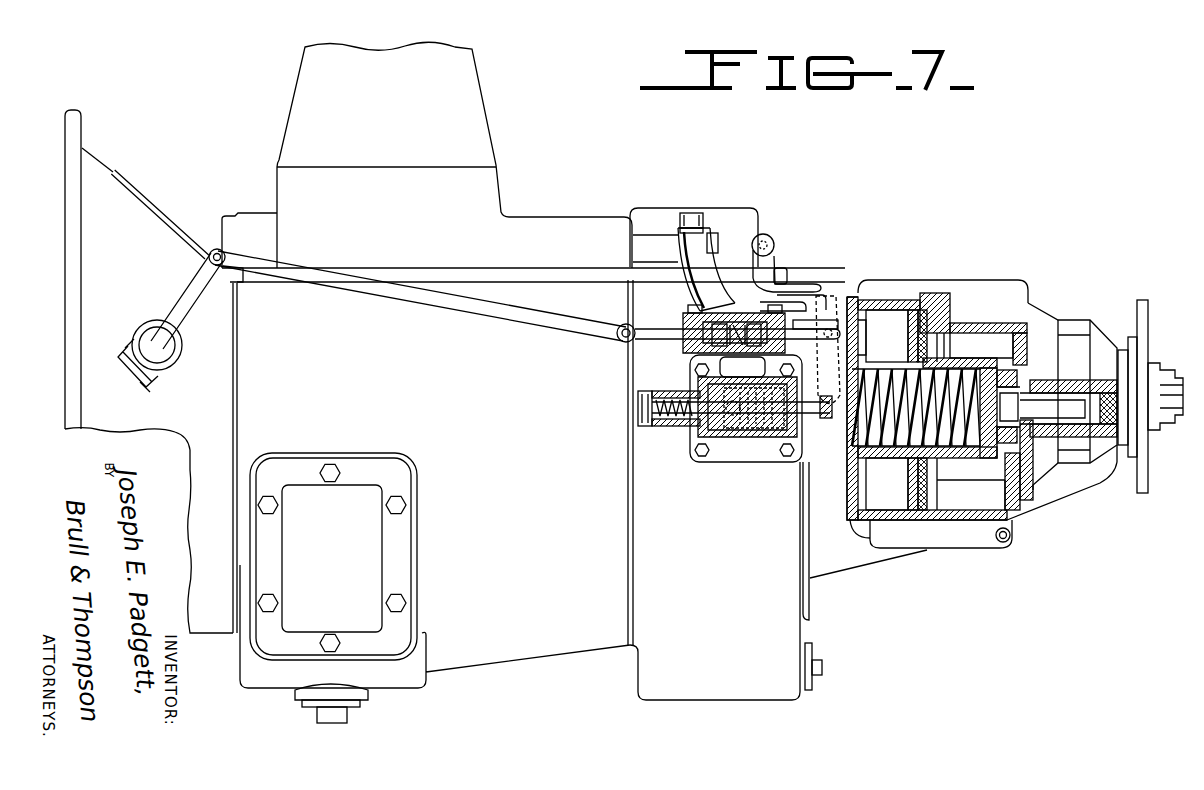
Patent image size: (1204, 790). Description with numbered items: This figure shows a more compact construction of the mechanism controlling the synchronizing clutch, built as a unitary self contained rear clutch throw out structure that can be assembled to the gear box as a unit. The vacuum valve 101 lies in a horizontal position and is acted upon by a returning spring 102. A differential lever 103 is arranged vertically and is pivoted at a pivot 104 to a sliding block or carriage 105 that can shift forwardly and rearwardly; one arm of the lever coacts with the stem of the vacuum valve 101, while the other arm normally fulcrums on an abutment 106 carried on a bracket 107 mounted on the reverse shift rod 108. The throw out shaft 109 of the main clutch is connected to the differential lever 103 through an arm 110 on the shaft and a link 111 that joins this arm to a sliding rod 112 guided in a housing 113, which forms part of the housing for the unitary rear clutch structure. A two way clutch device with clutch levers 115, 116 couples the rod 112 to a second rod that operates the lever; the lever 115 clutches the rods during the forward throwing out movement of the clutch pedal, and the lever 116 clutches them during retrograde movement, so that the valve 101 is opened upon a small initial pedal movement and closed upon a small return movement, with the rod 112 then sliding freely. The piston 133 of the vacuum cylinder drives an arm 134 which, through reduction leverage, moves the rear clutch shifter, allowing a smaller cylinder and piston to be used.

The vacuum valve 101 is at (764, 455).
The returning spring 102 is at (673, 421).
The differential lever 103 is at (767, 263).
The pivot 104 is at (838, 332).
The sliding block or carriage 105 is at (812, 324).
The abutment 106 is at (771, 239).
The bracket 107 is at (698, 236).
The reverse shift rod 108 is at (651, 240).
The throw out shaft 109 is at (167, 357).
The arm 110 is at (174, 306).
The link 111 is at (404, 294).
The sliding part or rod 112 is at (636, 342).
The housing 113 is at (683, 318).
The clutch lever 115 is at (716, 341).
The clutch lever 116 is at (757, 339).
The piston 133 is at (910, 333).
The arm 134 is at (984, 366).